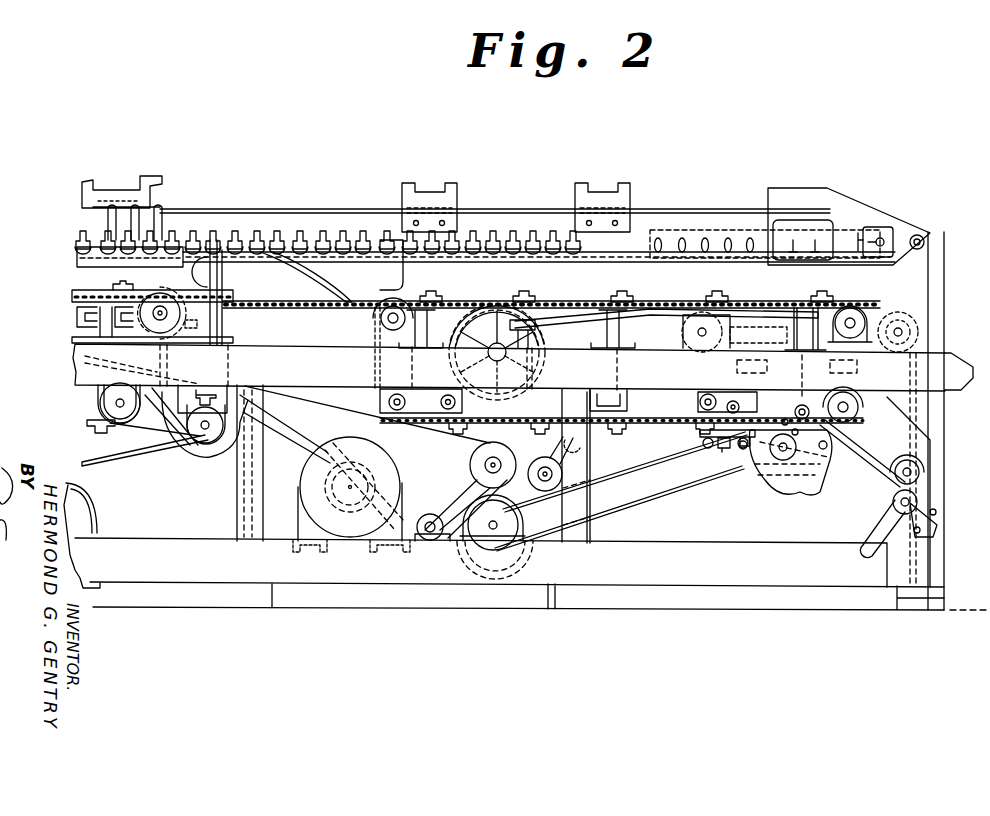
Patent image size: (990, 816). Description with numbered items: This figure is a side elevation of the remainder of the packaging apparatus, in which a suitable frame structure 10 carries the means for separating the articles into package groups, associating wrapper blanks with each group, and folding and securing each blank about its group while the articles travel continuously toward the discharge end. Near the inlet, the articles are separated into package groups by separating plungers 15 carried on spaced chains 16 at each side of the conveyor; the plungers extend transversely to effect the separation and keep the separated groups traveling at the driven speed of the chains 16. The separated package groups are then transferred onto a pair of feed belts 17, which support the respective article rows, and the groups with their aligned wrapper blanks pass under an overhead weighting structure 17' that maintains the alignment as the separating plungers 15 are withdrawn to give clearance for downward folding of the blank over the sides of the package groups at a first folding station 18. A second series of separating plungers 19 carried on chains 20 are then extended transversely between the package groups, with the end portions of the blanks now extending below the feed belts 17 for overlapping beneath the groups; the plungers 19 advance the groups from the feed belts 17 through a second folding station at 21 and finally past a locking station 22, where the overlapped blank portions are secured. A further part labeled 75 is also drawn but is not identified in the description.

The frame structure 10 is at (426, 593).
The separating plungers 15 is at (115, 283).
The chains 16 is at (83, 294).
The feed belts 17 is at (297, 278).
The overhead weighting structure 17' is at (122, 189).
The first folding station 18 is at (390, 271).
The separating plungers 19 is at (519, 300).
The chains 20 is at (479, 301).
The second folding station 21 is at (592, 295).
The locking station 22 is at (797, 295).
The idler pulley 75 is at (570, 445).